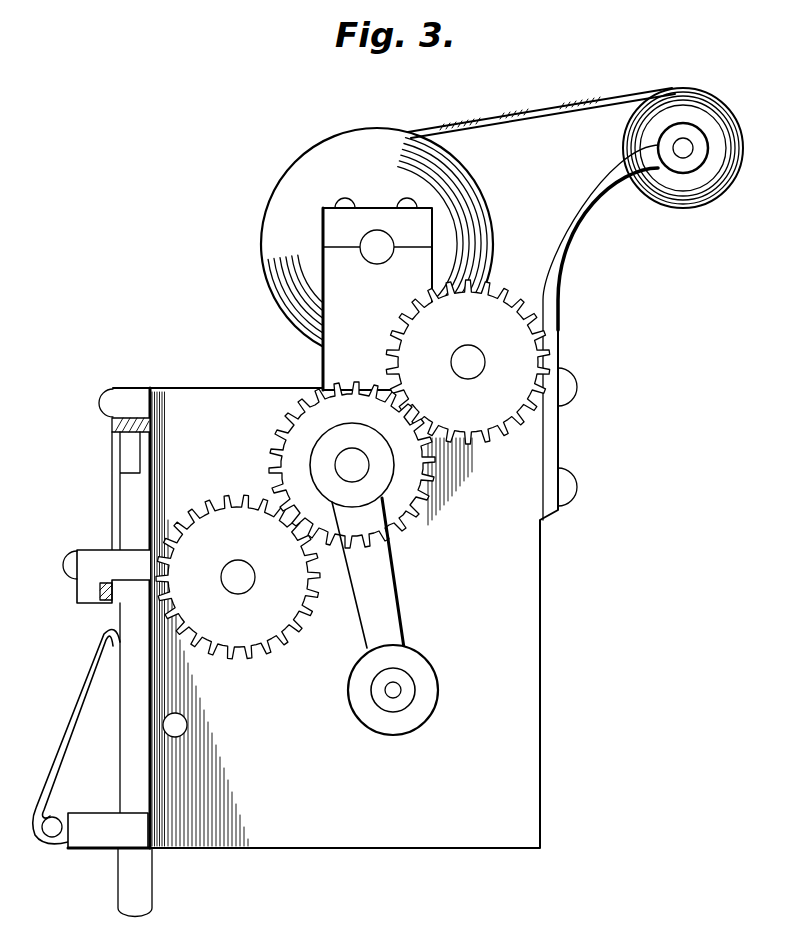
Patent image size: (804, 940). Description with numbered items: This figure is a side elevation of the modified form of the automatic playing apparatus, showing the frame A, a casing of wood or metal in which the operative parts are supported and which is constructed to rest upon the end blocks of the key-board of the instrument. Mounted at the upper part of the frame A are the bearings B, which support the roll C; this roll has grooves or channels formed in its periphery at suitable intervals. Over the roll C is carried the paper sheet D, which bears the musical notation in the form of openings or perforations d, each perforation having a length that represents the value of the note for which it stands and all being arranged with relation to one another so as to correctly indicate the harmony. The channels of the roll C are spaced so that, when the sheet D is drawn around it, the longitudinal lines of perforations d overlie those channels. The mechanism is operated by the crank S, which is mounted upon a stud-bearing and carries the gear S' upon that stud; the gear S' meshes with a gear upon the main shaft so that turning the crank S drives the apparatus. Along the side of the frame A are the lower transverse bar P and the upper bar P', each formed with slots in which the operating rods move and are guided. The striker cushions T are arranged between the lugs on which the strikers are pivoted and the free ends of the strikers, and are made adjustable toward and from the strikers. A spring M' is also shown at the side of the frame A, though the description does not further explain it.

The roll C is at (377, 244).
The bearings B is at (377, 294).
The paper sheet D is at (541, 113).
The perforations d is at (525, 113).
The frame A is at (421, 468).
The gear S' is at (373, 465).
The crank S is at (374, 579).
The striker cushions T is at (112, 426).
The upper bar P' is at (106, 561).
The spring M' is at (76, 737).
The lower transverse bar P is at (109, 817).